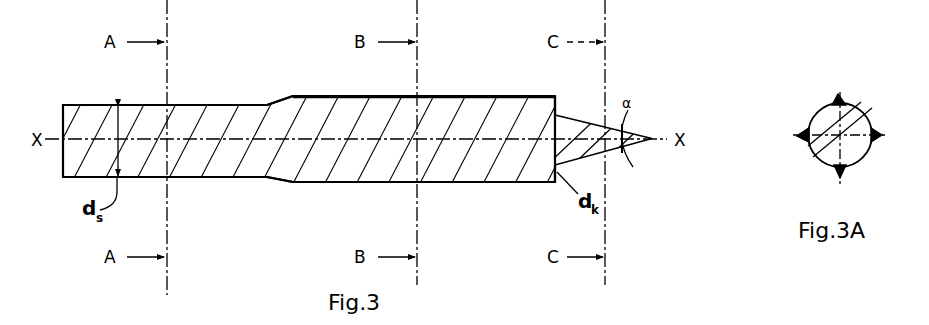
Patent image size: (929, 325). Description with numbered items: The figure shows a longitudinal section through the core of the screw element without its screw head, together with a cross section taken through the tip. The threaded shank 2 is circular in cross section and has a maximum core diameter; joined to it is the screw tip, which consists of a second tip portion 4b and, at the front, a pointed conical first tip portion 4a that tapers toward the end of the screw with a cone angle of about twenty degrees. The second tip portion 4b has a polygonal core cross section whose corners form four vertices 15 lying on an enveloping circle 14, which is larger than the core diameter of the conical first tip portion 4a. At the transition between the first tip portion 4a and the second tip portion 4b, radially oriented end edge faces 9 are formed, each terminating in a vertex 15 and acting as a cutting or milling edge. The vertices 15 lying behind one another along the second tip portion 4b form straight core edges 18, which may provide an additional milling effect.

In FIG. 3, the threaded shank 2 is at (210, 105).
In FIG. 3A, the threaded shank 2 is at (853, 120).
In FIG. 3, the straight core edges 18 is at (317, 90).
In FIG. 3, the second tip portion 4b is at (437, 115).
In FIG. 3, the end edge face 9 is at (555, 84).
In FIG. 3, the first tip portion 4a is at (580, 130).
In FIG. 3A, the vertex 15 is at (838, 96).
In FIG. 3A, the enveloping circle 14 is at (797, 129).